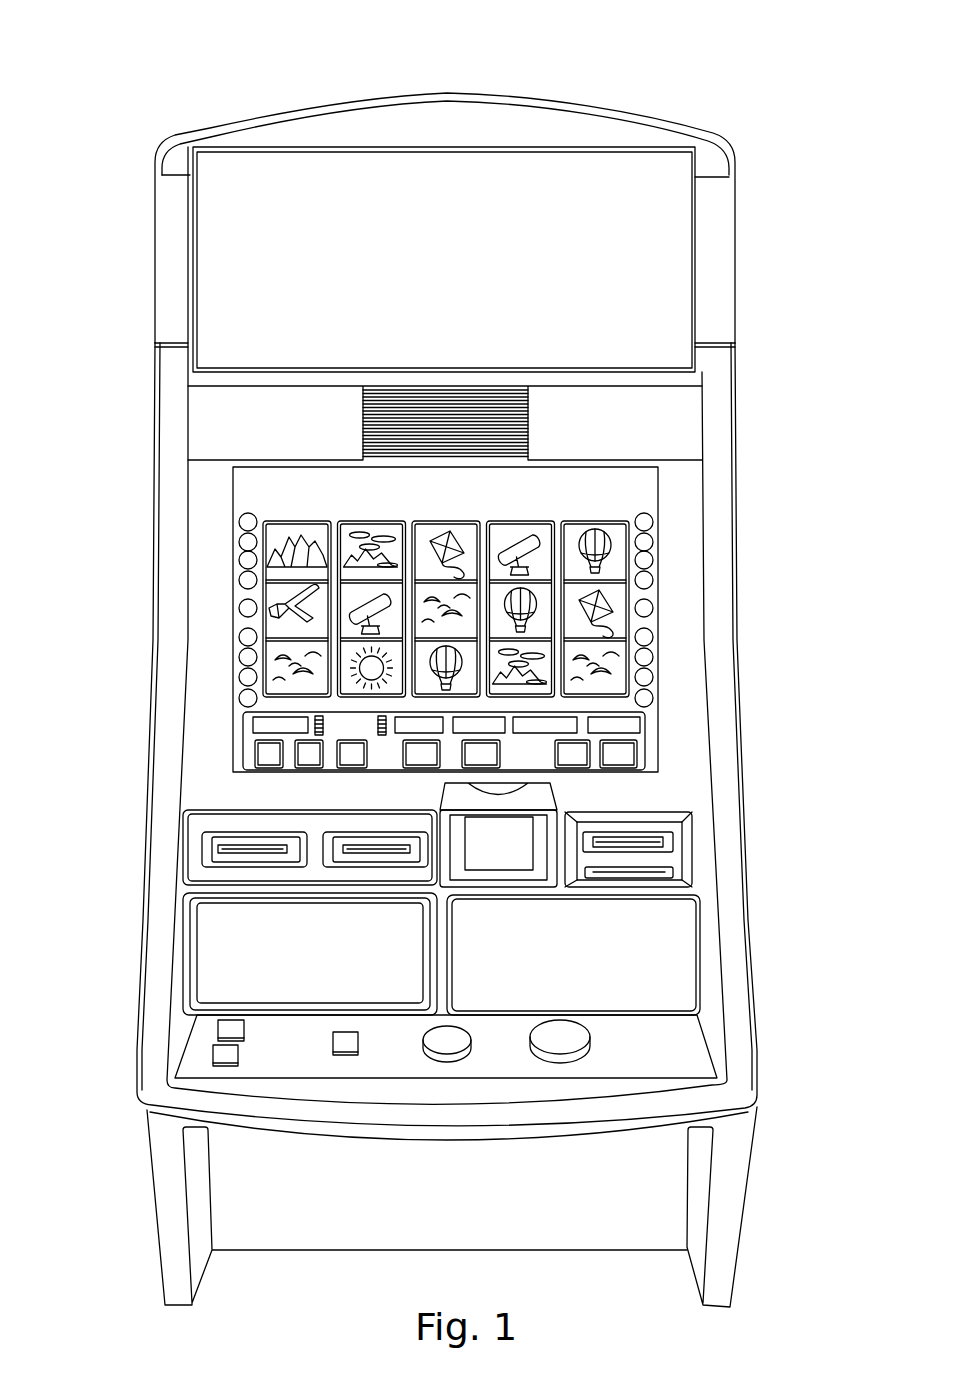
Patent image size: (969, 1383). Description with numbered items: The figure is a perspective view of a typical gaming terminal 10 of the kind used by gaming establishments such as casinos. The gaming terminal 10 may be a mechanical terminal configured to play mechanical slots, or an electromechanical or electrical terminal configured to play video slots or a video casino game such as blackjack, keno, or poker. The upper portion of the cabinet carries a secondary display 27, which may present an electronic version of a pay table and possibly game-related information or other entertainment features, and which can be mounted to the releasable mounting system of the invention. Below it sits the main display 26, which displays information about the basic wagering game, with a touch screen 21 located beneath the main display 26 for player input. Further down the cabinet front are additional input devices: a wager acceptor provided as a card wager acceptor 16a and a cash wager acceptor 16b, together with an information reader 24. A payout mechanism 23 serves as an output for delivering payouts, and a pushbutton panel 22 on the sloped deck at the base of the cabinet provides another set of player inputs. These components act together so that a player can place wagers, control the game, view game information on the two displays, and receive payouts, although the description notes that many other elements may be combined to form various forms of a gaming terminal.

The gaming terminal 10 is at (685, 97).
The secondary display 27 is at (655, 268).
The main display 26 is at (655, 565).
The touch screen 21 is at (240, 732).
The cash wager acceptor 16b is at (507, 827).
The card wager acceptor 16a is at (687, 847).
The information reader 24 is at (213, 848).
The payout mechanism 23 is at (325, 860).
The pushbutton panel 22 is at (568, 1030).